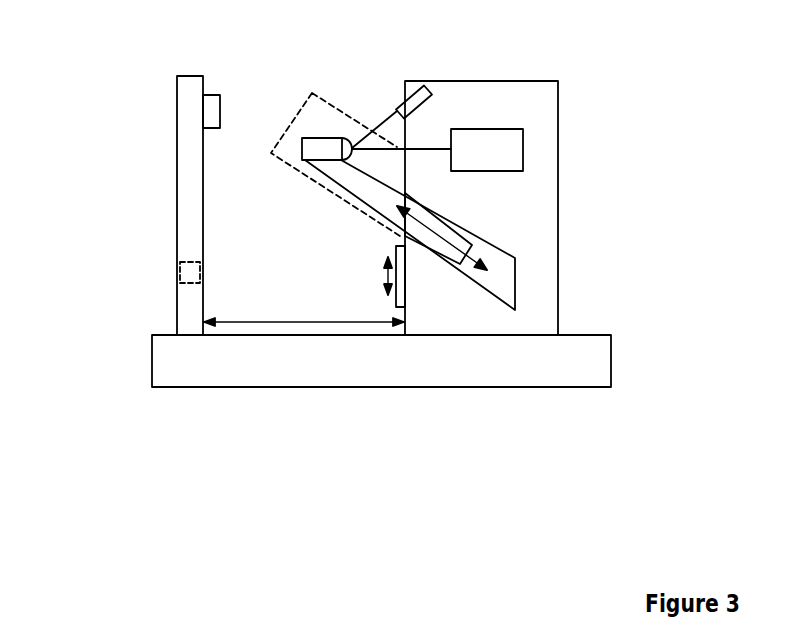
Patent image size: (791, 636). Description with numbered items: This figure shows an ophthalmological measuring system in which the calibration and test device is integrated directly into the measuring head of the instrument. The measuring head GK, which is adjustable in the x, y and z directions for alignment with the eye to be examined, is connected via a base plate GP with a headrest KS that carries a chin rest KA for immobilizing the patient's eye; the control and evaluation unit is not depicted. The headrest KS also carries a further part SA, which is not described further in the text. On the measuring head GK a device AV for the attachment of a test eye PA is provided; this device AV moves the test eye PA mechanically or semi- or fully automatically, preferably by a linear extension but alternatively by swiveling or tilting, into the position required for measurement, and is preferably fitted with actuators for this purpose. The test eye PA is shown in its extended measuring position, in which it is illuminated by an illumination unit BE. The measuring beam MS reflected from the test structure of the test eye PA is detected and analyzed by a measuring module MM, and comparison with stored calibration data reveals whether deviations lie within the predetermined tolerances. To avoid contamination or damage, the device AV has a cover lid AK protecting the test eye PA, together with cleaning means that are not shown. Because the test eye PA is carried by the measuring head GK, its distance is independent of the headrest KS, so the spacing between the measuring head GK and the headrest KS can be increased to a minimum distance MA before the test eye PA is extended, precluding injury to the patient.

The sensor arrangement SA is at (208, 113).
The headrest KS is at (185, 198).
The chin rest KA is at (180, 268).
The test eye PA is at (318, 147).
The illumination unit BE is at (418, 100).
The measuring beam MS is at (435, 148).
The measuring module MM is at (490, 140).
The measuring head GK is at (537, 205).
The device for the attachment of at least one test eye AV is at (502, 282).
The cover lid AK is at (407, 303).
The minimum distance MA is at (304, 309).
The base plate GP is at (575, 358).